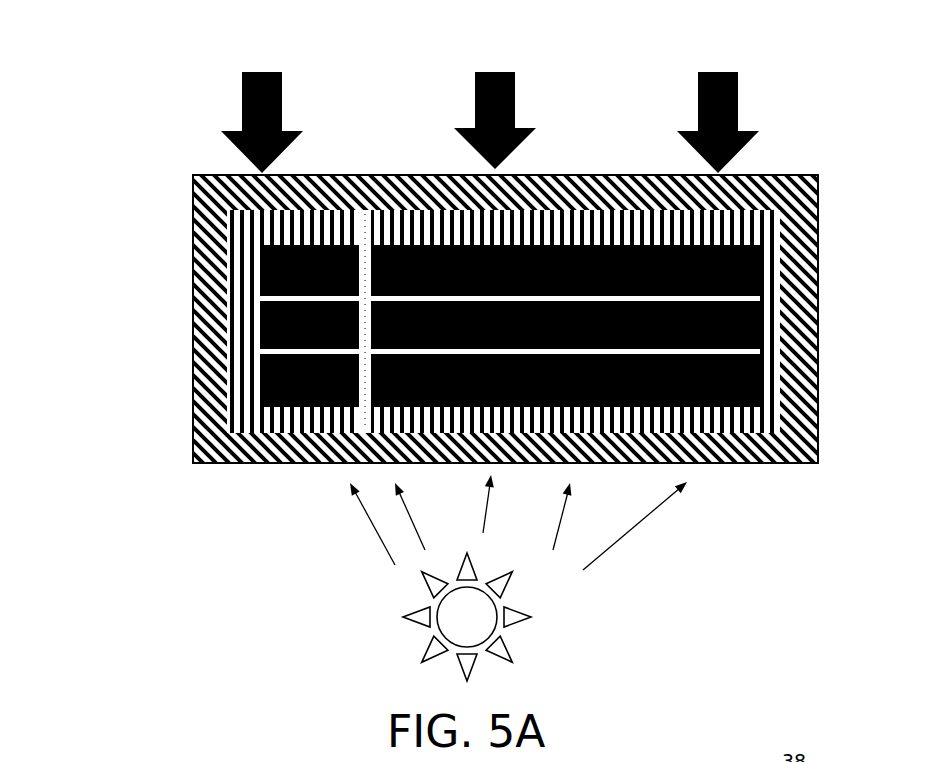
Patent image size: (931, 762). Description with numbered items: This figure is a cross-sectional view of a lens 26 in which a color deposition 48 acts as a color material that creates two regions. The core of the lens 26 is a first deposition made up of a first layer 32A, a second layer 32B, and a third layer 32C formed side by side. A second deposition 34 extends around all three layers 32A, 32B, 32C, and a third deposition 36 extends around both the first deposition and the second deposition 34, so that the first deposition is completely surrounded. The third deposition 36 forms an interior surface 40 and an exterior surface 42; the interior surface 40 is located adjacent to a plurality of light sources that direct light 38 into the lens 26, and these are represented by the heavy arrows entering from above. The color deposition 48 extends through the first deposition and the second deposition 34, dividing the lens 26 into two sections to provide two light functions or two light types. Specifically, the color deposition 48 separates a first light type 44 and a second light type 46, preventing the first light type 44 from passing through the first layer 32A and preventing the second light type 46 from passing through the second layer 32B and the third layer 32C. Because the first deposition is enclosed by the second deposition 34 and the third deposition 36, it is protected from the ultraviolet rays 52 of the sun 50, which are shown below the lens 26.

The lens 26 is at (105, 240).
The first layer 32A is at (257, 258).
The second layer 32B is at (257, 310).
The third layer 32C is at (257, 358).
The second deposition 34 is at (760, 247).
The third deposition 36 is at (212, 395).
The light 38 is at (242, 121).
The interior surface 40 is at (208, 175).
The exterior surface 42 is at (262, 463).
The first light type 44 is at (286, 243).
The second light type 46 is at (547, 212).
The color deposition 48 is at (365, 212).
The sun 50 is at (578, 610).
The ultraviolet rays 52 is at (740, 521).